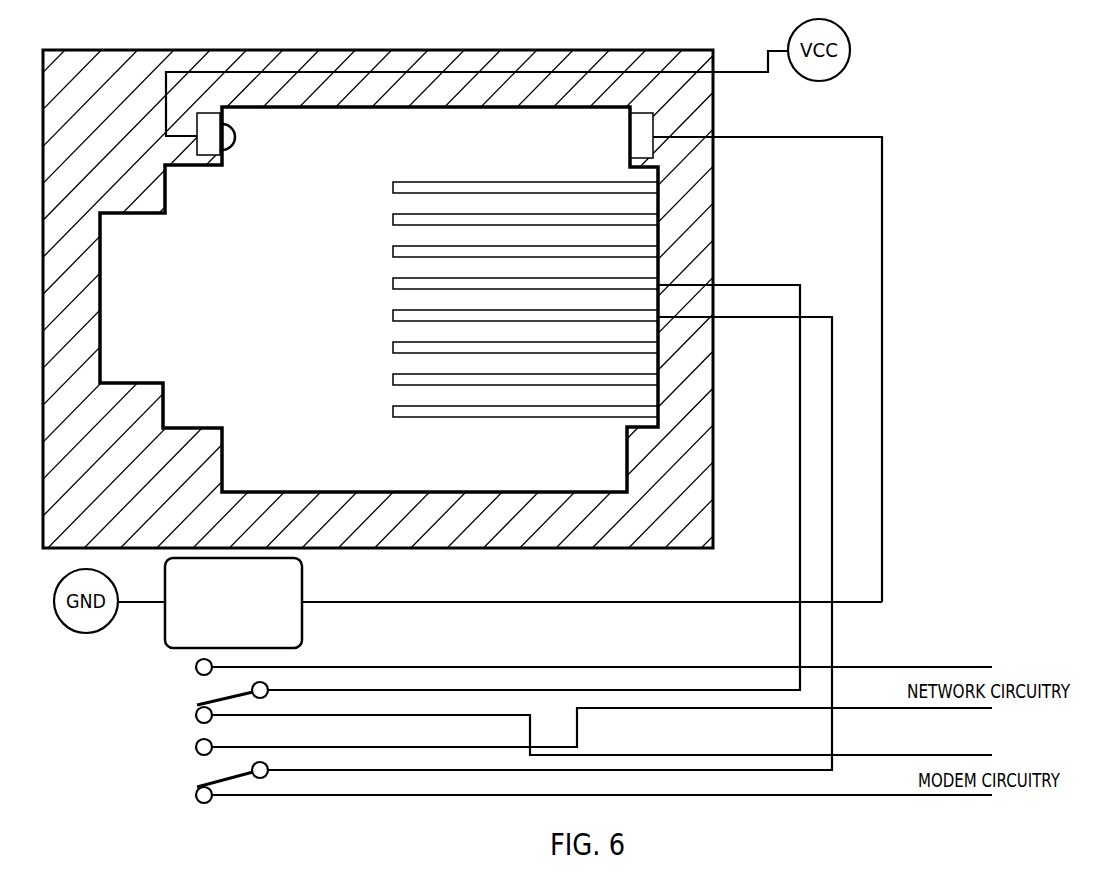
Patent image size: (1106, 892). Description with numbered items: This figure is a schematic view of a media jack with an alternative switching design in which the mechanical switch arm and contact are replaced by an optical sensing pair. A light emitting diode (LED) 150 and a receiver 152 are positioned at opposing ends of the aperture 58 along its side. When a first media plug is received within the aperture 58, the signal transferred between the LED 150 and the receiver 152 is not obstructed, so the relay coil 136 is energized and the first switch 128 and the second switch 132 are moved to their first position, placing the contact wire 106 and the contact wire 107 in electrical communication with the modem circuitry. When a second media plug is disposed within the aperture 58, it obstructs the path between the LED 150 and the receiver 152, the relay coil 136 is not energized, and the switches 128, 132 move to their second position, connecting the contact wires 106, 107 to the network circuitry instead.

The aperture 58 is at (288, 316).
The light emitting diode (LED) 150 is at (207, 145).
The receiver 152 is at (645, 127).
The contact wire 107 is at (397, 285).
The contact wire 106 is at (397, 316).
The relay coil 136 is at (160, 627).
The second switch 132 is at (254, 688).
The first switch 128 is at (260, 779).